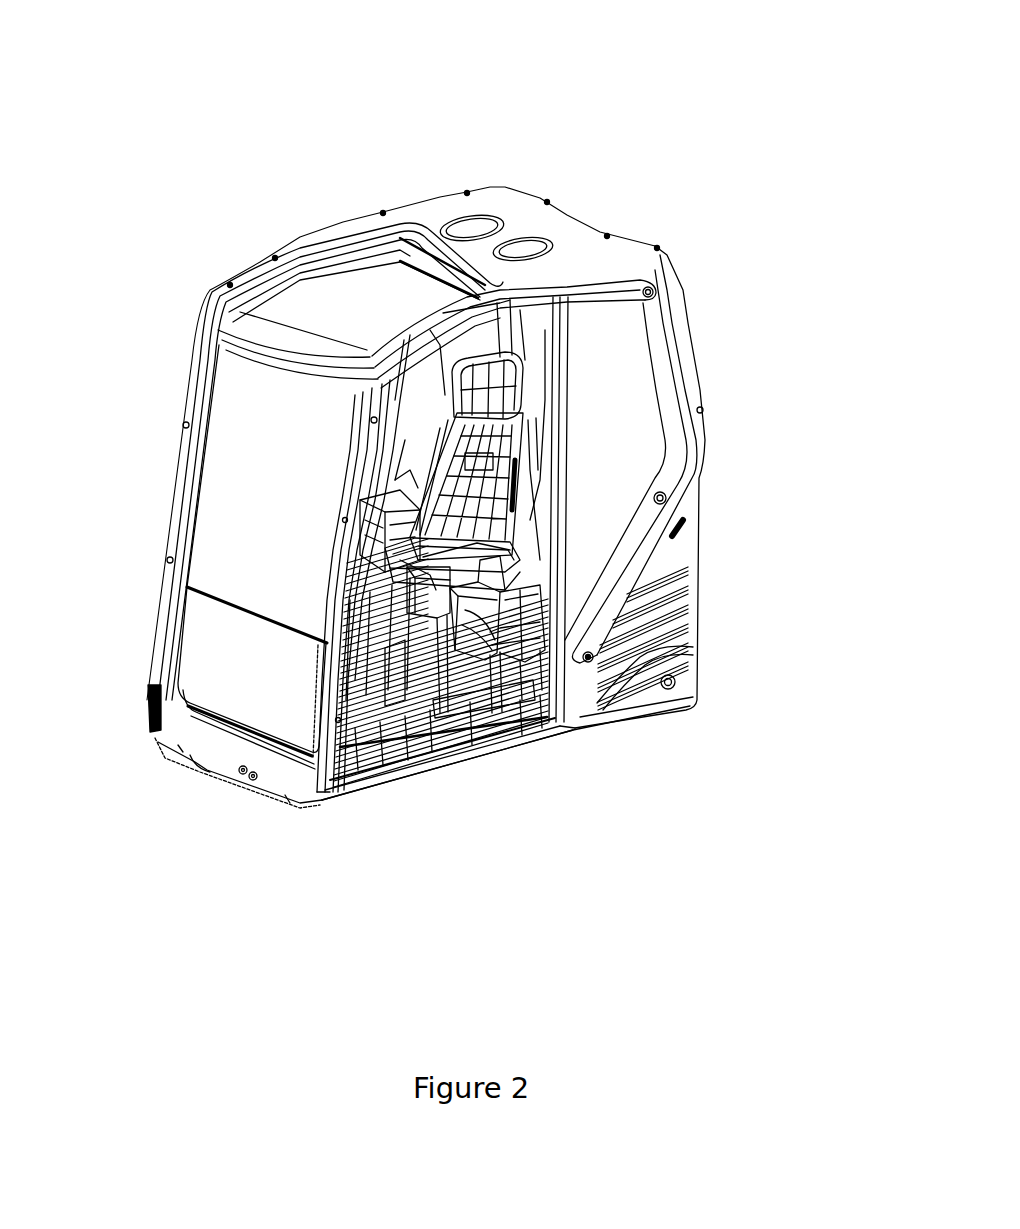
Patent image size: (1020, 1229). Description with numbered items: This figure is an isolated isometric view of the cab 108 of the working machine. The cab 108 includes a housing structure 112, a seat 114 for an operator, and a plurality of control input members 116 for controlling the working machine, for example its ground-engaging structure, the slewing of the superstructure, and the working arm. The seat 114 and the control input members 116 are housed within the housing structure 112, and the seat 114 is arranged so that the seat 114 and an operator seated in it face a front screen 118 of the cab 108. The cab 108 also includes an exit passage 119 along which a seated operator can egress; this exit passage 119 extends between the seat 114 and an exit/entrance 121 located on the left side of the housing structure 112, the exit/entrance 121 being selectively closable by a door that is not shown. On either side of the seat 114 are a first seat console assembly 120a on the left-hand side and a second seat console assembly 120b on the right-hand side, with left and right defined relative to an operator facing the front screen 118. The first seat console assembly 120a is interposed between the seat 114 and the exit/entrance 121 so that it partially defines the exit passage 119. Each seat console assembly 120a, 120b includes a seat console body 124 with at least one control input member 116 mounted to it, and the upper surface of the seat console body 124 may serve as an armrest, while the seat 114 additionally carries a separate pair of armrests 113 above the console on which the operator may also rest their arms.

The cab 108 is at (633, 140).
The housing structure 112 is at (470, 227).
The armrests 113 is at (500, 543).
The seat 114 is at (497, 413).
The control input members 116 is at (415, 573).
The front screen 118 is at (232, 527).
The exit passage 119 is at (392, 718).
The first seat console assembly 120a is at (498, 630).
The second seat console assembly 120b is at (385, 525).
The exit/entrance 121 is at (390, 782).
The seat console body 124 is at (530, 615).